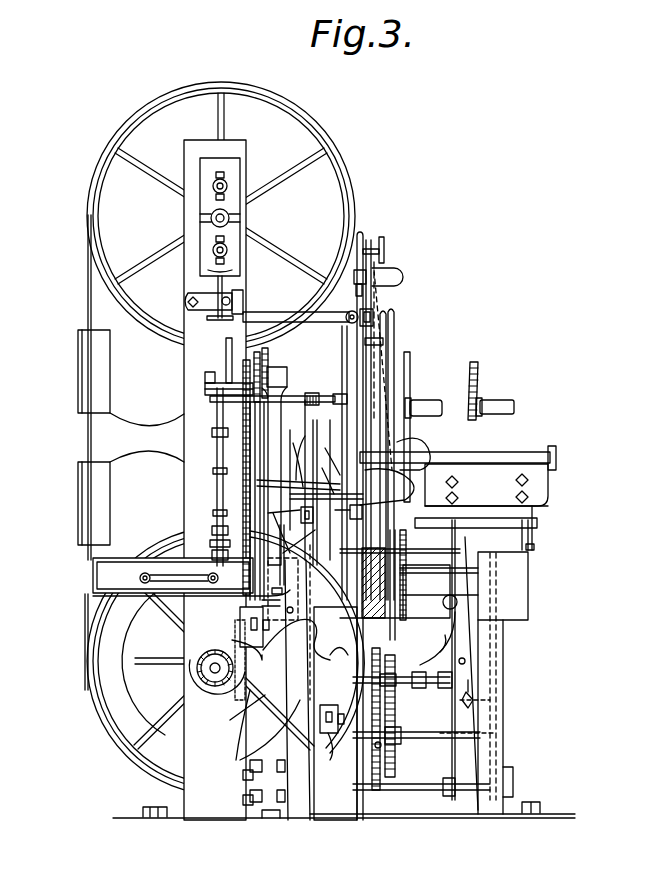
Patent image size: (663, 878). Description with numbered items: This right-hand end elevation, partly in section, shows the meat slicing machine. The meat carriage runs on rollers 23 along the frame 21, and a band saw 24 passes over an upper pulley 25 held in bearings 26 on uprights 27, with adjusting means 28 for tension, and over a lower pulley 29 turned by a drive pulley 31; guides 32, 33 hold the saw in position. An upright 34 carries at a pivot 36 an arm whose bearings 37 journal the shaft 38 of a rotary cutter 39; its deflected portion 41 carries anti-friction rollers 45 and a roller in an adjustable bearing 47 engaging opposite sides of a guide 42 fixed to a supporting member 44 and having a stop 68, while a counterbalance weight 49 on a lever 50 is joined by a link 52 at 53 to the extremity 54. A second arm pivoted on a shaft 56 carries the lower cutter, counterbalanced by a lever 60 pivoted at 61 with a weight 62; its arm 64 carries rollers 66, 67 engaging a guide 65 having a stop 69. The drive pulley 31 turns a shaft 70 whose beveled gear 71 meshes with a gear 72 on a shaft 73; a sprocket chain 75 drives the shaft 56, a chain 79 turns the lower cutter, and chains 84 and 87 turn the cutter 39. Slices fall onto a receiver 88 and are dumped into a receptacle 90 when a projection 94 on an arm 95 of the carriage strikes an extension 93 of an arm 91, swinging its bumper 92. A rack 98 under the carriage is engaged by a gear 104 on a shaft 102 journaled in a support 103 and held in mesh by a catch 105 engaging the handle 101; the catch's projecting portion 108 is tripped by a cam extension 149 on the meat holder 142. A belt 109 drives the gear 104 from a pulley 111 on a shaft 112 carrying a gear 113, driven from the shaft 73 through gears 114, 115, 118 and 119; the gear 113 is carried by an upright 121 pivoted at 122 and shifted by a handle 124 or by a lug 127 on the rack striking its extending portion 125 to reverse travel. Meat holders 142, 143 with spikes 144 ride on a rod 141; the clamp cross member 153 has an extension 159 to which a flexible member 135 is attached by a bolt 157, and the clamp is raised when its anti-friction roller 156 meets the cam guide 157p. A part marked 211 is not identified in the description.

The track or frame 21 is at (530, 572).
The rollers 23 is at (535, 547).
The bone cutting saw 24 is at (87, 304).
The pulley 25 is at (102, 252).
The bearings 26 is at (236, 195).
The uprights 27 is at (188, 321).
The adjusting means 28 is at (224, 286).
The pulley 29 is at (222, 661).
The drive pulley 31 is at (145, 686).
The guide 32 is at (97, 357).
The guide 33 is at (308, 444).
The upright 34 is at (282, 440).
The pivot 36 is at (253, 362).
The spaced bearings 37 is at (214, 388).
The shaft 38 is at (326, 392).
The rotary meat cutter 39 is at (352, 332).
The deflected portion 41 is at (209, 478).
The guide 42 is at (226, 342).
The supporting member 44 is at (270, 600).
The anti-friction rollers 45 is at (208, 481).
The adjustable bearing 47 is at (207, 492).
The counterbalance weight 49 is at (238, 612).
The arm or lever 50 is at (305, 644).
The link 52 is at (267, 553).
The connection 53 is at (128, 558).
The extremity 54 is at (209, 545).
The pivot shaft 56 is at (373, 595).
The lever 60 is at (375, 715).
The pivot 61 is at (262, 630).
The counterbalancing weight 62 is at (317, 713).
The arm 64 is at (316, 502).
The guide 65 is at (352, 500).
The anti-friction rollers 66 is at (322, 471).
The anti-friction roller 67 is at (407, 497).
The stop 68 is at (208, 558).
The stop 69 is at (327, 453).
The shaft 70 is at (214, 685).
The beveled gear 71 is at (213, 661).
The gear 72 is at (236, 720).
The shaft 73 is at (265, 727).
The sprocket chain 75 is at (290, 682).
The sprocket chain 79 is at (305, 540).
The sprocket chain 84 is at (243, 450).
The sprocket chain 87 is at (270, 368).
The receiver 88 is at (290, 462).
The receptacle 90 is at (191, 568).
The arm 91 is at (275, 515).
The bumper 92 is at (282, 476).
The extension 93 is at (288, 532).
The projection 94 is at (307, 449).
The arm 95 is at (432, 458).
The rack member 98 is at (407, 547).
The handle 101 is at (421, 649).
The shaft 102 is at (432, 602).
The support 103 is at (470, 578).
The gear 104 is at (400, 557).
The catch 105 is at (428, 638).
The projecting portion 108 is at (460, 482).
The belt 109 is at (455, 590).
The pulley 111 is at (466, 661).
The shaft 112 is at (472, 700).
The gear 113 is at (395, 700).
The gear 114 is at (398, 680).
The gear 115 is at (396, 767).
The gear 118 is at (378, 750).
The gear 119 is at (360, 780).
The upright 121 is at (455, 713).
The pivot 122 is at (344, 805).
The handle 124 is at (455, 620).
The extending portion 125 is at (470, 519).
The lug or extension 127 is at (460, 498).
The flexible member 135 is at (400, 280).
The bar or rod 141 is at (528, 452).
The meat holder 142 is at (396, 350).
The meat holder 143 is at (485, 358).
The spikes 144 is at (484, 405).
The extension 149 is at (429, 416).
The cross bar 153 is at (373, 273).
The anti-friction roller 156 is at (396, 318).
The bolt 157 is at (373, 260).
The cam guide 157p is at (411, 394).
The extension 159 is at (363, 230).
The shaft 211 is at (409, 660).